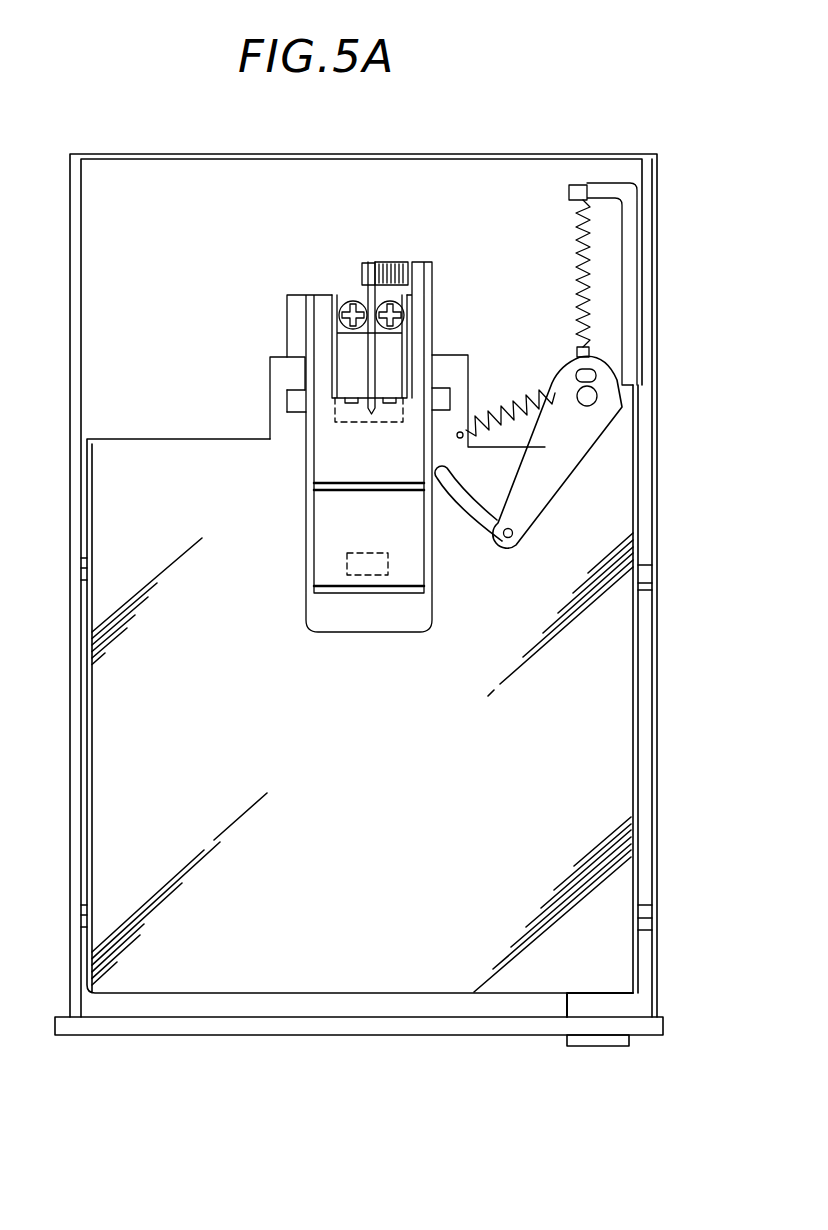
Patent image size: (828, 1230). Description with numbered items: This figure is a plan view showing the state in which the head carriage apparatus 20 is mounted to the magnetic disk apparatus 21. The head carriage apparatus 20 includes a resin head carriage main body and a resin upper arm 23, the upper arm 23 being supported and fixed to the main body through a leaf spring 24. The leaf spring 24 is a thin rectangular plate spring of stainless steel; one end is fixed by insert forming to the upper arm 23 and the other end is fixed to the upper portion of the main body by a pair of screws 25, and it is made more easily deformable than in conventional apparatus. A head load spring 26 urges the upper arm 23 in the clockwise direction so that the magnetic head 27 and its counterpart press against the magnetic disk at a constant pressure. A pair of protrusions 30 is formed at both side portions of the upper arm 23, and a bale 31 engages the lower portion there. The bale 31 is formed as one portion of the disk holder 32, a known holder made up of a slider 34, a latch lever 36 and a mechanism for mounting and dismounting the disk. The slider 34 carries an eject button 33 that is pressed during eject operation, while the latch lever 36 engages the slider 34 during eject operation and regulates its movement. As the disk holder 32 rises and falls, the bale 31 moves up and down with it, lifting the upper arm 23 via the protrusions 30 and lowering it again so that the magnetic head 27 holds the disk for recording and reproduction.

The head carriage apparatus 20 is at (358, 262).
The magnetic disk apparatus 21 is at (437, 320).
The upper arm 23 is at (342, 518).
The leaf spring 24 is at (342, 357).
The screws 25 is at (343, 300).
The head load spring 26 is at (390, 262).
The magnetic head 27 is at (370, 575).
The protrusions 30 is at (445, 402).
The bale 31 is at (278, 379).
The disk holder 32 is at (598, 689).
The eject button 33 is at (588, 1048).
The slider 34 is at (503, 1003).
The latch lever 36 is at (568, 462).